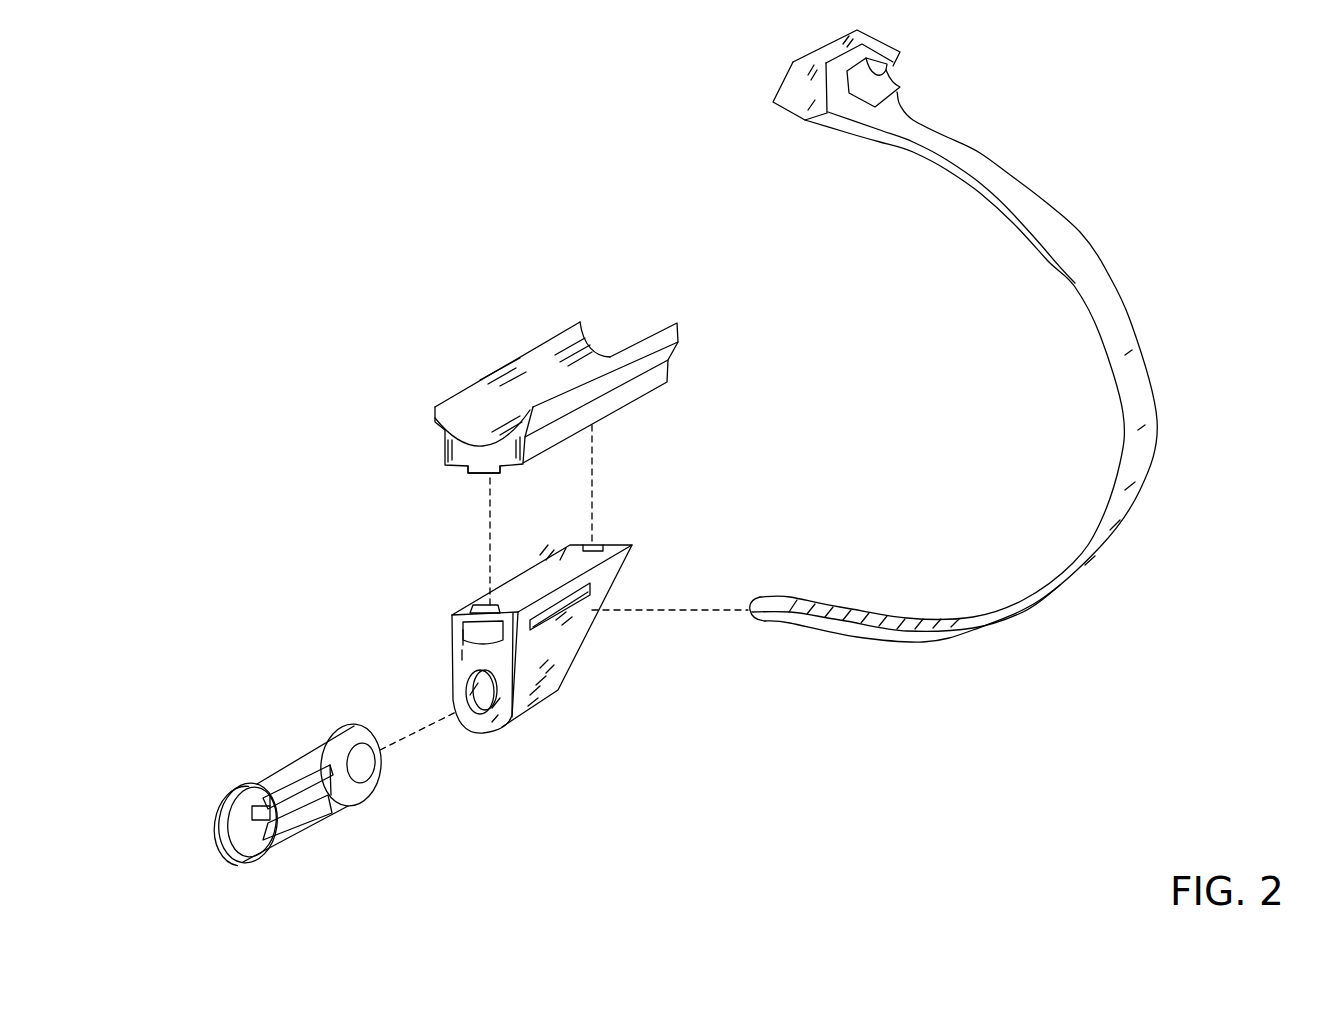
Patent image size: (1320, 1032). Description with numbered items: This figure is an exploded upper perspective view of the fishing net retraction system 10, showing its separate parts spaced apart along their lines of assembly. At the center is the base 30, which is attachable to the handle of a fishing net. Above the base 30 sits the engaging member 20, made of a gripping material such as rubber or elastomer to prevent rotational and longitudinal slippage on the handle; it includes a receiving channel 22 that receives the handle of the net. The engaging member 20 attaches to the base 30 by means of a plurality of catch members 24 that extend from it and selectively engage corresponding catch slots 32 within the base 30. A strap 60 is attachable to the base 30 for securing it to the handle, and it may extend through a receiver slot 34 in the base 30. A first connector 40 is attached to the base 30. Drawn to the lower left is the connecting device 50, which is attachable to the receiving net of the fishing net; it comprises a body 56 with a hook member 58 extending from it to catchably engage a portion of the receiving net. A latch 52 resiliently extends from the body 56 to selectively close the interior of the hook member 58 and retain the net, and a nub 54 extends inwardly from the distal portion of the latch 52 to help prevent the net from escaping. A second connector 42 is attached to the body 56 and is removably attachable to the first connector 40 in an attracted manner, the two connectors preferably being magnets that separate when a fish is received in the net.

The fishing net retraction system 10 is at (300, 258).
The engaging member 20 is at (452, 385).
The receiving channel 22 is at (560, 347).
The catch members 24 is at (473, 472).
The base 30 is at (558, 695).
The catch slots 32 is at (592, 545).
The receiver slot 34 is at (565, 648).
The first connector 40 is at (486, 700).
The second connector 42 is at (375, 760).
The connecting device 50 is at (210, 772).
The latch 52 is at (280, 790).
The nub 54 is at (290, 808).
The body 56 is at (358, 732).
The hook member 58 is at (250, 855).
The strap 60 is at (1100, 232).